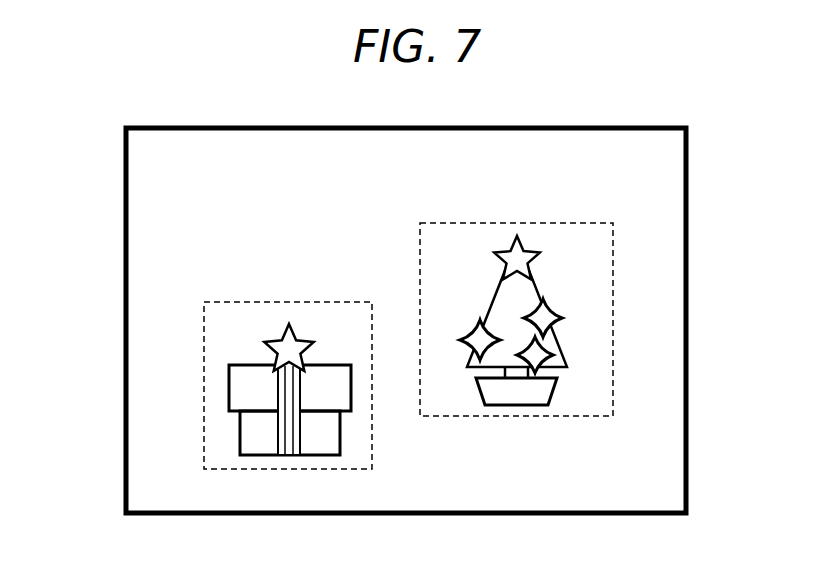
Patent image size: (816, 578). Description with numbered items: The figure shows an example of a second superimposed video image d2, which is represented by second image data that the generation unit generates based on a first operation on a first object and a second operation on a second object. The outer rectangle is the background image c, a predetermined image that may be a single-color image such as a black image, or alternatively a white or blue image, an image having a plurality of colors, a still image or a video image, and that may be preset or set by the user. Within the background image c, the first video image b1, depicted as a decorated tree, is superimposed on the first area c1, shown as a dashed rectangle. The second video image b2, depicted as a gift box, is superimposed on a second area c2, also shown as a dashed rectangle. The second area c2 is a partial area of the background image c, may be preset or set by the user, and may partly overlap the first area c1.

The background image c is at (655, 160).
The first area c1 is at (563, 417).
The second area c2 is at (272, 468).
The first video image b1 is at (565, 327).
The second video image b2 is at (222, 408).
The second superimposed video image d2 is at (102, 334).